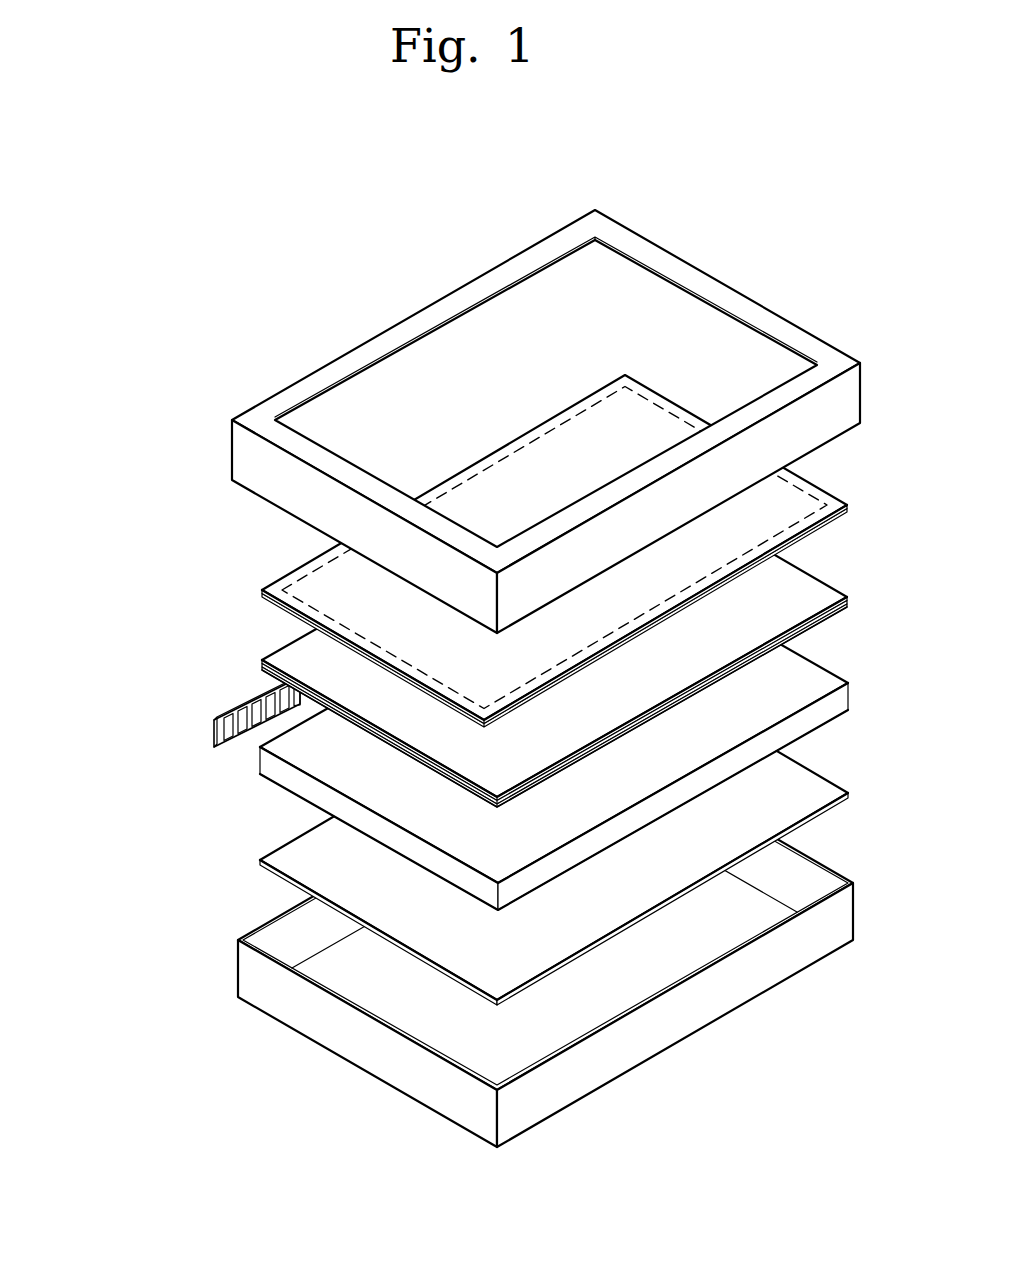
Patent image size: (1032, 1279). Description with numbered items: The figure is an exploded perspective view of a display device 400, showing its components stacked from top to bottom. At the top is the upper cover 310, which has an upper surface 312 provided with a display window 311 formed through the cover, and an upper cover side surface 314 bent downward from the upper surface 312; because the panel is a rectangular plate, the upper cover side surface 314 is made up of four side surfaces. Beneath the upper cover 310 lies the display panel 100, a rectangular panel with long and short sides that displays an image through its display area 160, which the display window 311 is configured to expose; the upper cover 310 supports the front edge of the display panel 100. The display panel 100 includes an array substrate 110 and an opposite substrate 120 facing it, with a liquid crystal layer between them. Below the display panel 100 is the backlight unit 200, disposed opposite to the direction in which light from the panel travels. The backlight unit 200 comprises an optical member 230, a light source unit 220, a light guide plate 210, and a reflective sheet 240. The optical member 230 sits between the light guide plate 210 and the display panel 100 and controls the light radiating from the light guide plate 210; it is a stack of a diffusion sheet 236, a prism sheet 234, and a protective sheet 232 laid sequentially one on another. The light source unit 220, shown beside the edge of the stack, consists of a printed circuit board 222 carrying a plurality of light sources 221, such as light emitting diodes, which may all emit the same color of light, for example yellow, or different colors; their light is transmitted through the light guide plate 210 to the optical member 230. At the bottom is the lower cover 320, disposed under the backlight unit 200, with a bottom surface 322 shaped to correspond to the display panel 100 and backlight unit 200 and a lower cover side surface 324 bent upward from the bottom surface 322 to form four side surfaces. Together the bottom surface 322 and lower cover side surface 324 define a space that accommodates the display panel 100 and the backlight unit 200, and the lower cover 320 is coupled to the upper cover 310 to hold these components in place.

The display device 400 is at (718, 172).
The upper cover 310 is at (505, 421).
The display window 311 is at (477, 362).
The upper surface 312 is at (790, 335).
The upper cover side surface 314 is at (257, 473).
The display panel 100 is at (468, 551).
The array substrate 110 is at (265, 600).
The opposite substrate 120 is at (262, 591).
The display area 160 is at (293, 573).
The backlight unit 200 is at (440, 732).
The optical member 230 is at (468, 633).
The protective sheet 232 is at (262, 662).
The prism sheet 234 is at (266, 668).
The diffusion sheet 236 is at (268, 673).
The light source unit 220 is at (196, 721).
The light sources 221 is at (224, 717).
The printed circuit board 222 is at (214, 738).
The light guide plate 210 is at (278, 772).
The reflective sheet 240 is at (302, 852).
The lower cover 320 is at (505, 940).
The bottom surface 322 is at (378, 987).
The lower cover side surface 324 is at (380, 1050).